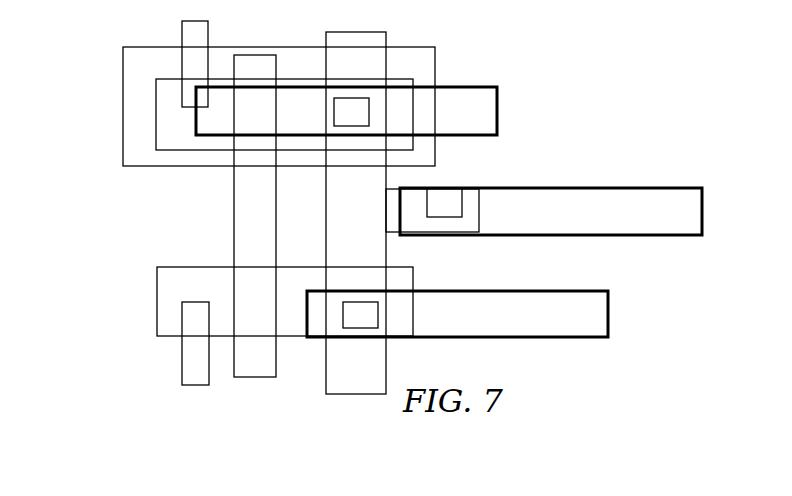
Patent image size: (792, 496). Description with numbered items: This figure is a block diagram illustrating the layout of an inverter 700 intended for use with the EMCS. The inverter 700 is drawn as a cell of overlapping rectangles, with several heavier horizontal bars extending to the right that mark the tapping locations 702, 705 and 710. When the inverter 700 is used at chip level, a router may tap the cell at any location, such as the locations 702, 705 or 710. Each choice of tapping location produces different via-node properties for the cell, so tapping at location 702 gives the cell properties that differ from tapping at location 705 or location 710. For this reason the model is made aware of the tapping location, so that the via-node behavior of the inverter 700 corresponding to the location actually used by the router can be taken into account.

The inverter 700 is at (97, 97).
The tapping location 702 is at (498, 110).
The tapping location 705 is at (703, 213).
The tapping location 710 is at (609, 315).